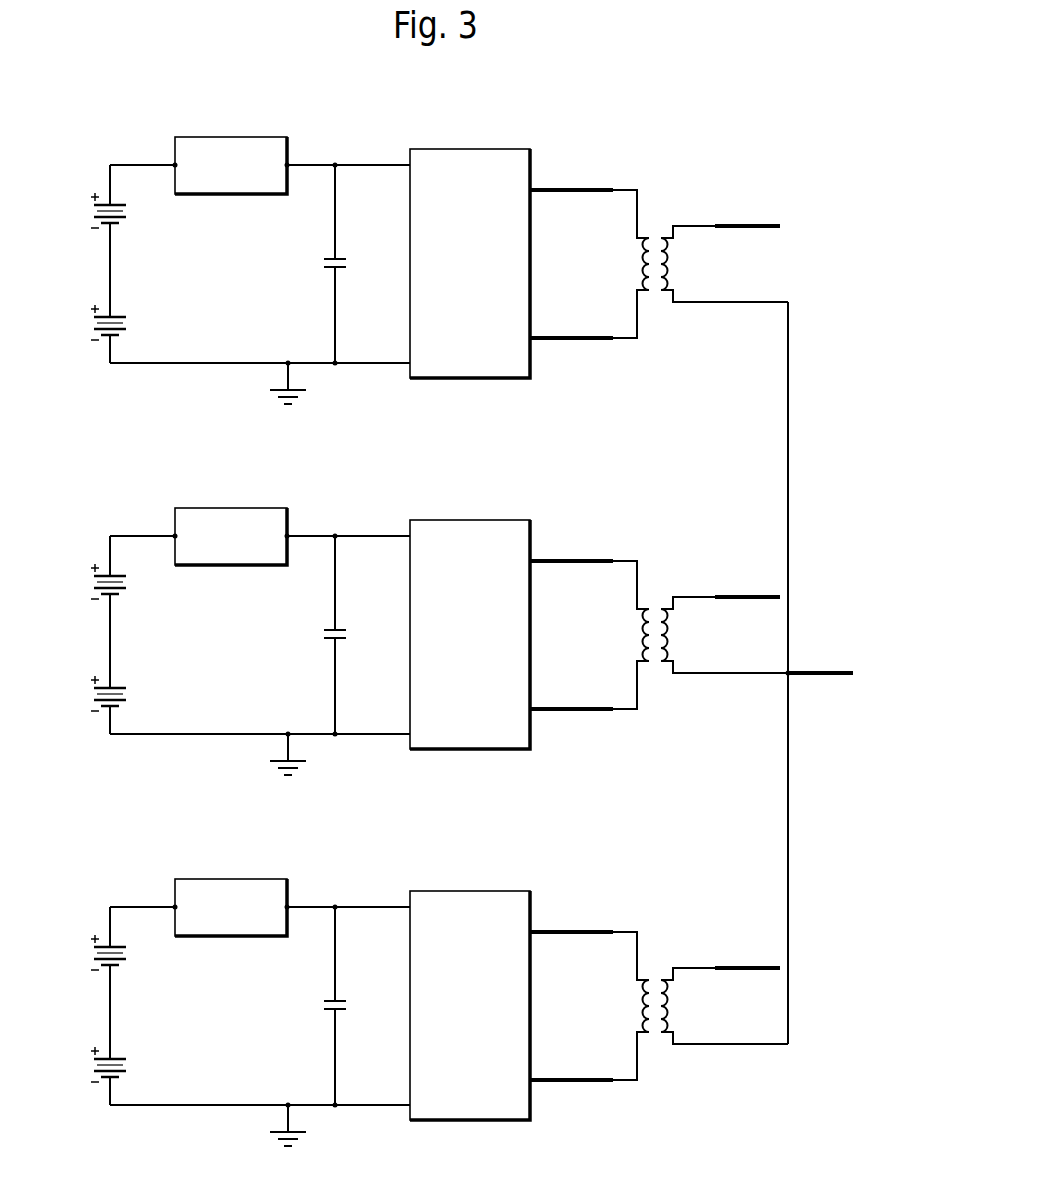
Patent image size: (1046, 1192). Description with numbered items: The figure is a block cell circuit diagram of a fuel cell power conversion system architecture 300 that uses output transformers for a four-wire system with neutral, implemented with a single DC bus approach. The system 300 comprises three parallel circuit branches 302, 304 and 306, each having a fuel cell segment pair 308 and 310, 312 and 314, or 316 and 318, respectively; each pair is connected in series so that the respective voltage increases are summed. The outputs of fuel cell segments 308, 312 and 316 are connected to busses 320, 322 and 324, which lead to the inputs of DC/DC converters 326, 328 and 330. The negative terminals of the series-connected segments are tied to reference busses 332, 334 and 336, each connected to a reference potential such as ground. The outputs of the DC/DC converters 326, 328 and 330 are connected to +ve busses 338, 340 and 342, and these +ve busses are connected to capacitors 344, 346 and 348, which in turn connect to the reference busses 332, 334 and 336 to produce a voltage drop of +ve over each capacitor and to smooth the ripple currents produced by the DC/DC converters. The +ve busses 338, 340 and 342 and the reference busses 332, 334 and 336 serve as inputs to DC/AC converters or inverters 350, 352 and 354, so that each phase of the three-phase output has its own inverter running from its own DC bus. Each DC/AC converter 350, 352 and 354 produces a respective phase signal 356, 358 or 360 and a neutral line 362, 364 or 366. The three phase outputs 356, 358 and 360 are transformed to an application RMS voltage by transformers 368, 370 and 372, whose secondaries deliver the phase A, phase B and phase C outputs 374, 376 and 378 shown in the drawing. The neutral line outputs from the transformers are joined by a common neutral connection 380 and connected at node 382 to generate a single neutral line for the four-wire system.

The fuel cell power conversion system architecture 300 is at (742, 118).
The parallel circuit branch 302 is at (105, 131).
The parallel circuit branch 304 is at (425, 616).
The parallel circuit branch 306 is at (425, 987).
The fuel cell segment 308 is at (88, 194).
The fuel cell segment 310 is at (88, 304).
The fuel cell segment 312 is at (96, 604).
The fuel cell segment 314 is at (96, 681).
The fuel cell segment 316 is at (96, 975).
The fuel cell segment 318 is at (96, 1052).
The bus 320 is at (149, 164).
The bus 322 is at (142, 511).
The bus 324 is at (142, 882).
The DC/DC converter 326 is at (234, 137).
The DC/DC converter 328 is at (231, 512).
The DC/DC converter 330 is at (231, 883).
The reference bus 332 is at (216, 363).
The reference bus 334 is at (260, 731).
The reference bus 336 is at (260, 1102).
The +ve bus 338 is at (323, 165).
The +ve bus 340 is at (348, 511).
The +ve bus 342 is at (348, 882).
The capacitor 344 is at (349, 265).
The capacitor 346 is at (352, 635).
The capacitor 348 is at (352, 1006).
The DC/AC converter 350 is at (483, 203).
The DC/AC converter 352 is at (470, 634).
The DC/AC converter 354 is at (470, 1005).
The phase signal 356 is at (624, 189).
The phase signal 358 is at (590, 558).
The phase signal 360 is at (590, 929).
The neutral line 362 is at (610, 340).
The neutral line 364 is at (589, 714).
The neutral line 366 is at (589, 1085).
The transformer 368 is at (655, 292).
The transformer 370 is at (663, 657).
The transformer 372 is at (663, 1028).
The phase A output terminal 374 is at (696, 226).
The phase B output terminal 376 is at (720, 579).
The phase C output terminal 378 is at (720, 950).
The common neutral bus 380 is at (787, 675).
The node 382 is at (821, 681).